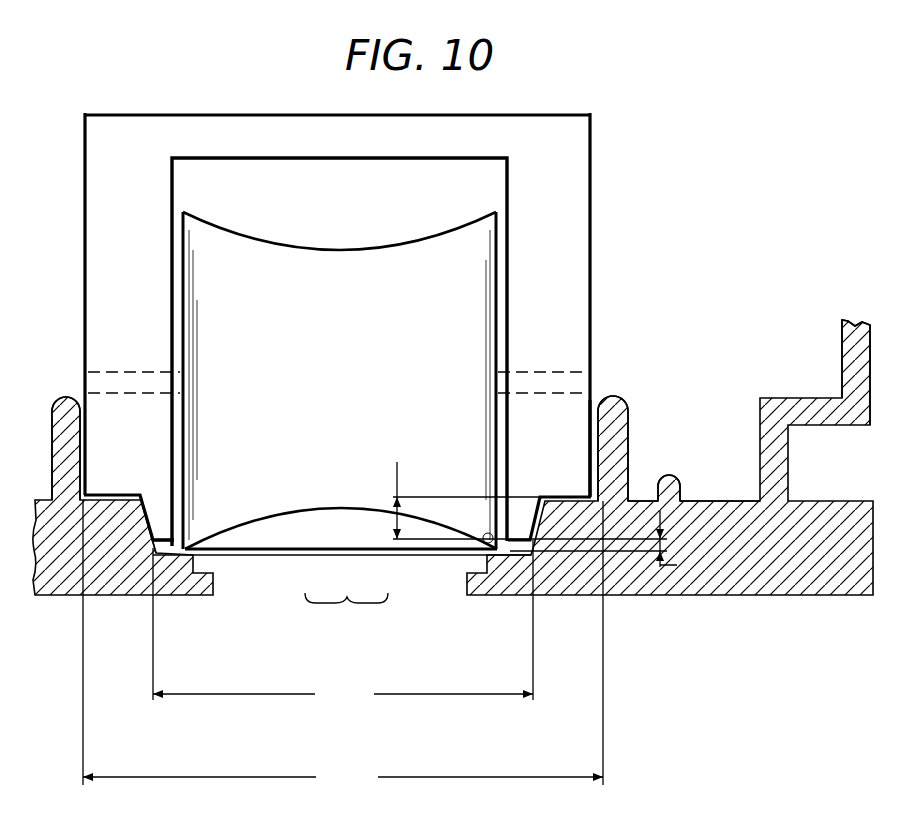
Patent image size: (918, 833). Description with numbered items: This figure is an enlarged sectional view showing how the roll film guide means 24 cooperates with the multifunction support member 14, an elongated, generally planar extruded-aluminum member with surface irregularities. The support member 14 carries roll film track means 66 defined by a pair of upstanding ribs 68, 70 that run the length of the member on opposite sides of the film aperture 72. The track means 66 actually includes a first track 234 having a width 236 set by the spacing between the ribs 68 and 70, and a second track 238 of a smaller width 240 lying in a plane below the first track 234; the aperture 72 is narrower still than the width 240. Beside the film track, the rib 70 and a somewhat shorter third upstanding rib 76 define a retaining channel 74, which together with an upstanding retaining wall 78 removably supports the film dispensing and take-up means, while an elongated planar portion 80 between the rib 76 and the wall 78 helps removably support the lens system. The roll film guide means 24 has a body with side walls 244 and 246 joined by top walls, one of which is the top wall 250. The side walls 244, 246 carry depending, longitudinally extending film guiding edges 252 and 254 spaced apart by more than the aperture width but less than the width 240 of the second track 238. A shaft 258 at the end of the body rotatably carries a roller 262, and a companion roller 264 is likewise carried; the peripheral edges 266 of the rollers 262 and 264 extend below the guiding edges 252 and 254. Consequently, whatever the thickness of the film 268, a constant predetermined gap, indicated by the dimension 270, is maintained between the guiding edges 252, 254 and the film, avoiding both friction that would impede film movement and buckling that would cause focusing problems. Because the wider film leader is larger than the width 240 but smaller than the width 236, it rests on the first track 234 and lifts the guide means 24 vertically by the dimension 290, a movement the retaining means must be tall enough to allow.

The multifunction support member 14 is at (741, 600).
The roll film guide means 24 is at (130, 95).
The roll film track means 66 is at (598, 396).
The upstanding rib 68 is at (55, 400).
The upstanding rib 70 is at (627, 418).
The aperture 72 is at (346, 616).
The retaining channel 74 is at (643, 500).
The third upstanding rib 76 is at (678, 484).
The upstanding retaining wall 78 is at (842, 371).
The elongated planar portion 80 is at (710, 500).
The first track 234 is at (108, 497).
The width of first track 236 is at (343, 646).
The second track 238 is at (158, 548).
The width of second track 240 is at (343, 624).
The side wall 244 is at (85, 176).
The side wall 246 is at (592, 266).
The top wall 250 is at (250, 113).
The film guiding edge 252 is at (153, 545).
The film guiding edge 254 is at (522, 536).
The shaft 258 is at (95, 378).
The roller 262 is at (339, 373).
The roller 264 is at (241, 236).
The peripheral edges of rollers 266 is at (200, 545).
The film 268 is at (300, 556).
The gap dimension 270 is at (618, 548).
The vertical lift dimension 290 is at (397, 463).